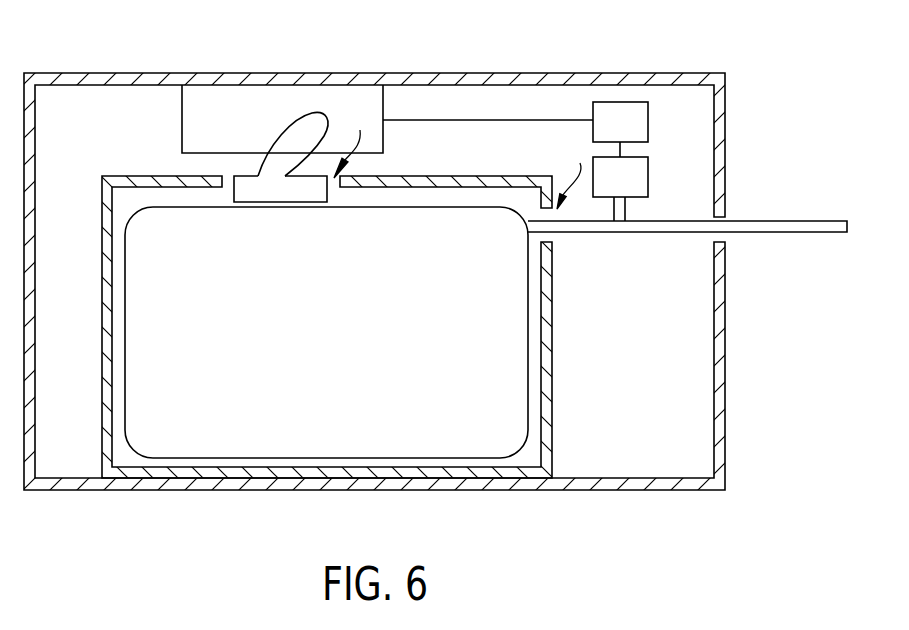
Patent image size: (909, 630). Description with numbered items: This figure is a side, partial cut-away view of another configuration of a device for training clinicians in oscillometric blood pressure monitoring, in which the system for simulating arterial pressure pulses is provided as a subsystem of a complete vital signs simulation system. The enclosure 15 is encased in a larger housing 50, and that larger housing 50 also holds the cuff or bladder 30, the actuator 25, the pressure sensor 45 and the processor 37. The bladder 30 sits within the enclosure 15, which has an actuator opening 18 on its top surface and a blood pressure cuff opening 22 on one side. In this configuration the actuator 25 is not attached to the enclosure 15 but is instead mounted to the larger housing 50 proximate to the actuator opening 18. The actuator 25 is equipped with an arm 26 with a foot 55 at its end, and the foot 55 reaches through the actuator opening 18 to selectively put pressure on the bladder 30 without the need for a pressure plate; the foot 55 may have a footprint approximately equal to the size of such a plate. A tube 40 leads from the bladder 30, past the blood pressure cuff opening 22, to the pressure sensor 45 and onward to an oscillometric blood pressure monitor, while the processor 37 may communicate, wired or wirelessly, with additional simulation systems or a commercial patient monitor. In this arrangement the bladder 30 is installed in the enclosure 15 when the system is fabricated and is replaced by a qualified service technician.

The enclosure 15 is at (298, 481).
The larger housing 50 is at (118, 491).
The bladder 30 is at (233, 430).
The actuator 25 is at (212, 95).
The arm 26 is at (320, 118).
The foot 55 is at (247, 192).
The actuator opening 18 is at (353, 141).
The blood pressure cuff opening 22 is at (572, 174).
The processor 37 is at (610, 133).
The pressure sensor 45 is at (610, 190).
The tube 40 is at (755, 232).